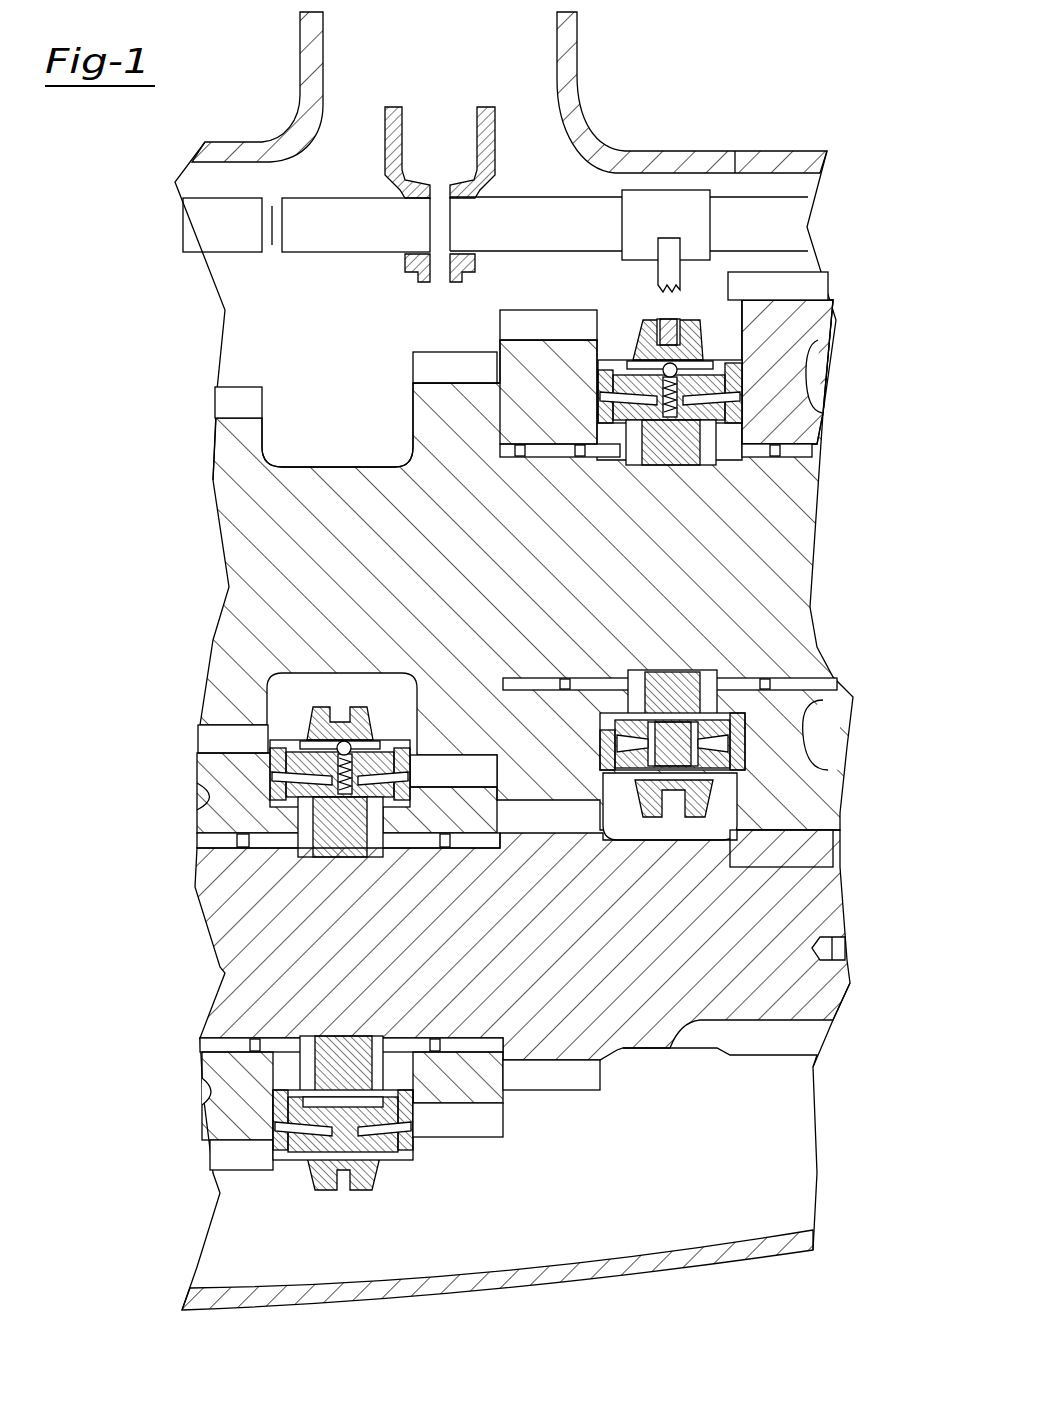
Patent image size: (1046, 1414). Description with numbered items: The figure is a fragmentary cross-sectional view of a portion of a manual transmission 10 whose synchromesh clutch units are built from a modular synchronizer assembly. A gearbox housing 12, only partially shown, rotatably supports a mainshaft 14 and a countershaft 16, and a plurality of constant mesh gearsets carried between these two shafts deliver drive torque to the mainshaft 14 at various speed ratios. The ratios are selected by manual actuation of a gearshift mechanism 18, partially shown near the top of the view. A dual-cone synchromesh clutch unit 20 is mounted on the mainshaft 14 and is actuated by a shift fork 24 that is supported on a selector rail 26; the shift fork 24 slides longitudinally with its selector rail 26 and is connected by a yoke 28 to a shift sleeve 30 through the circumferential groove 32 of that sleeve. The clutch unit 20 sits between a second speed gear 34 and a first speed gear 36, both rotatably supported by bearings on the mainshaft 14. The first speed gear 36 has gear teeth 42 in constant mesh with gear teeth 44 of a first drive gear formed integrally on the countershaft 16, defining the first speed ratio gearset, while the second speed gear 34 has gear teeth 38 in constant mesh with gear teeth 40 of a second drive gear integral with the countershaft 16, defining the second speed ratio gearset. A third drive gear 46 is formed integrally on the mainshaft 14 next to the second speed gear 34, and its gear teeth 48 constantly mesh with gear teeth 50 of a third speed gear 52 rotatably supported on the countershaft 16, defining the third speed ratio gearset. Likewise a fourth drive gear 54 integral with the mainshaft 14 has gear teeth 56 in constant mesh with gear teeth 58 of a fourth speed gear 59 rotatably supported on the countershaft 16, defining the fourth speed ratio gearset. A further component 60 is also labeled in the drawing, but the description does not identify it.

The transmission 10 is at (112, 390).
The gearbox housing 12 is at (613, 151).
The mainshaft 14 is at (720, 527).
The countershaft 16 is at (630, 977).
The gearshift mechanism 18 is at (328, 195).
The dual-cone synchromesh clutch unit 20 is at (618, 328).
The shift fork 24 is at (670, 257).
The selector rail 26 is at (735, 210).
The yoke 28 is at (670, 330).
The shift sleeve 30 is at (697, 793).
The circumferential groove 32 is at (670, 810).
The second speed gear 34 is at (547, 370).
The first speed gear 36 is at (785, 317).
The gear teeth 38 is at (545, 325).
The gear teeth 40 is at (553, 1073).
The gear teeth 42 is at (807, 290).
The gear teeth 44 is at (748, 1040).
The third drive gear 46 is at (447, 412).
The gear teeth 48 is at (445, 367).
The gear teeth 50 is at (468, 1120).
The third speed gear 52 is at (483, 1083).
The fourth drive gear 54 is at (247, 450).
The gear teeth 56 is at (245, 397).
The gear teeth 58 is at (230, 1157).
The fourth speed gear 59 is at (230, 1125).
The bearing hub 60 is at (677, 687).